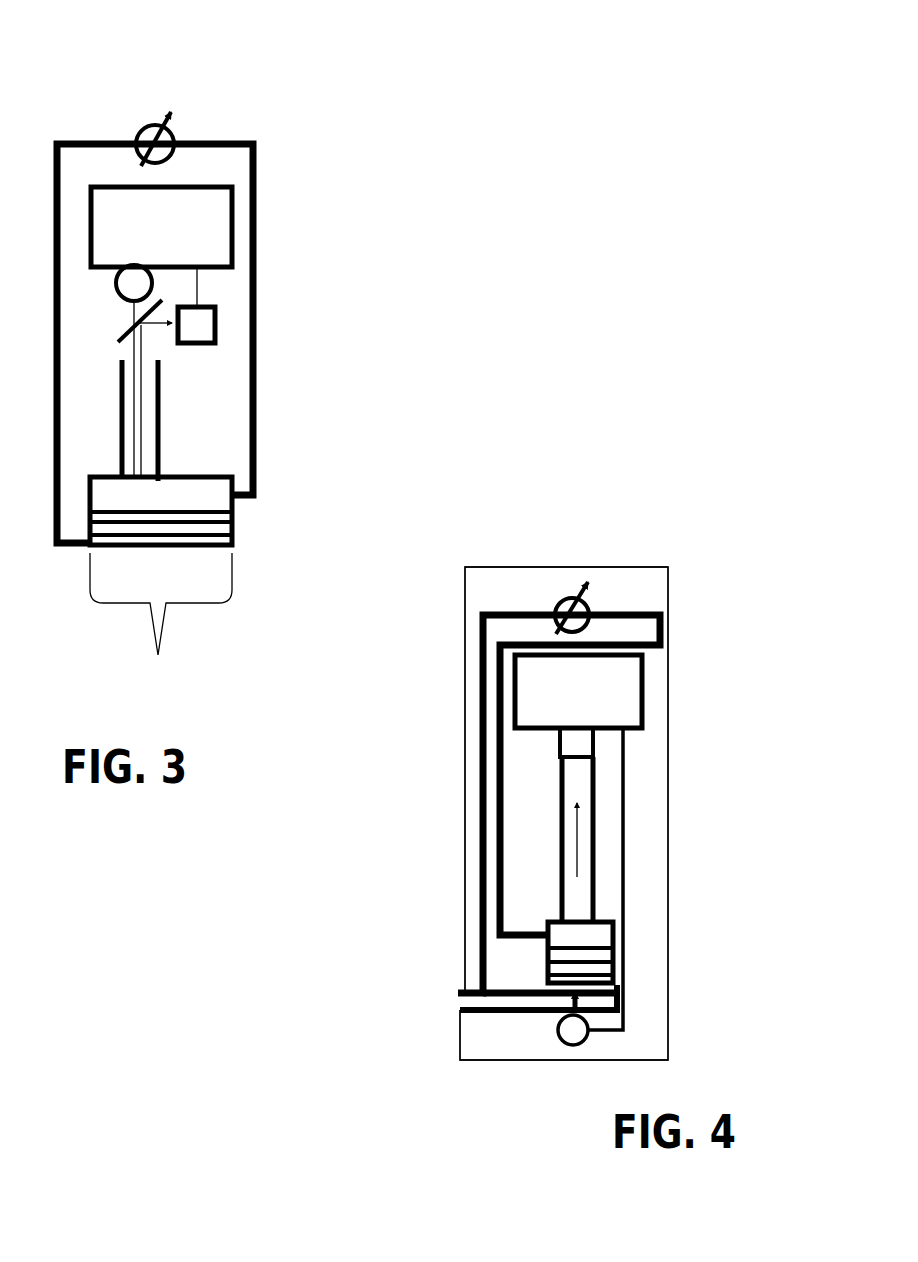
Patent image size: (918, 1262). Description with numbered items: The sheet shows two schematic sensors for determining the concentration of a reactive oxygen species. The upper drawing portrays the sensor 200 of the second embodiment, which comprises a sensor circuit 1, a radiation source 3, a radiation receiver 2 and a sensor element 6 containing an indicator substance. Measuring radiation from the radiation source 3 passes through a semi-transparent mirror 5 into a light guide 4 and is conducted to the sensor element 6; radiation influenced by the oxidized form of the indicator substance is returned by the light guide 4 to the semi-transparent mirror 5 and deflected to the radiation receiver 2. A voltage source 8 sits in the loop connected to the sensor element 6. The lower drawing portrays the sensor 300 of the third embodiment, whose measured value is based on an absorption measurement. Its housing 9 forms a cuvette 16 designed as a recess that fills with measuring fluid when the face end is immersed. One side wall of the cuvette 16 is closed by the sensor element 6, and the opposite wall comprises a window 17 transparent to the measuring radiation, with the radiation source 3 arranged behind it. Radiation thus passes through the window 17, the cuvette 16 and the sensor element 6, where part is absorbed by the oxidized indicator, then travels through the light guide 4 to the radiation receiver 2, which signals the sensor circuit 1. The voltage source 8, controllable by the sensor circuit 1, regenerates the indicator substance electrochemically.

In FIG. 3, the sensor circuit 1 is at (161, 227).
In FIG. 4, the sensor circuit 1 is at (578, 691).
In FIG. 3, the radiation receiver 2 is at (177, 305).
In FIG. 4, the radiation receiver 2 is at (576, 742).
In FIG. 3, the radiation source 3 is at (134, 283).
In FIG. 4, the radiation source 3 is at (590, 886).
In FIG. 3, the light guide 4 is at (163, 440).
In FIG. 4, the light guide 4 is at (598, 842).
In FIG. 3, the semi-transparent mirror 5 is at (126, 328).
In FIG. 3, the sensor element 6 is at (161, 591).
In FIG. 4, the sensor element 6 is at (613, 962).
In FIG. 3, the voltage source 8 is at (151, 127).
In FIG. 4, the voltage source 8 is at (565, 590).
In FIG. 4, the housing 9 is at (668, 835).
In FIG. 4, the cuvette 16 is at (473, 1003).
In FIG. 4, the window 17 is at (557, 1012).
In FIG. 3, the sensor 200 is at (293, 88).
In FIG. 4, the sensor 300 is at (696, 588).